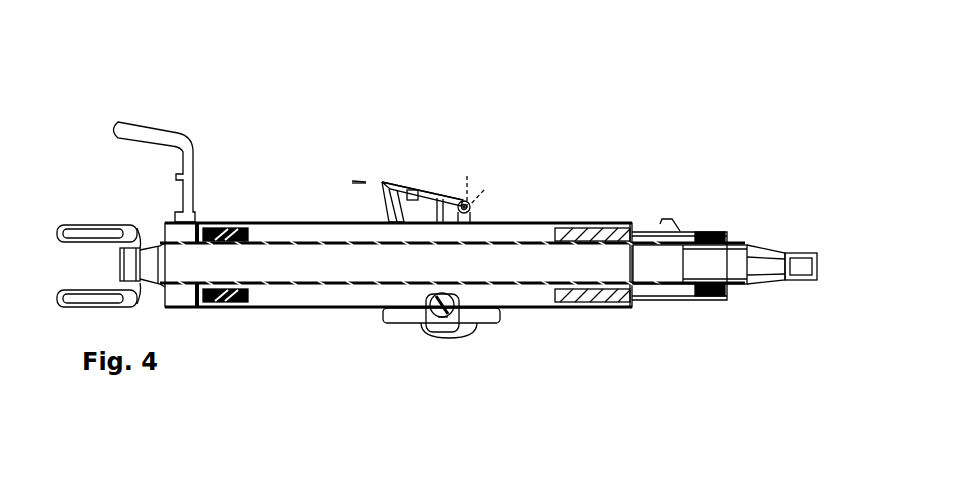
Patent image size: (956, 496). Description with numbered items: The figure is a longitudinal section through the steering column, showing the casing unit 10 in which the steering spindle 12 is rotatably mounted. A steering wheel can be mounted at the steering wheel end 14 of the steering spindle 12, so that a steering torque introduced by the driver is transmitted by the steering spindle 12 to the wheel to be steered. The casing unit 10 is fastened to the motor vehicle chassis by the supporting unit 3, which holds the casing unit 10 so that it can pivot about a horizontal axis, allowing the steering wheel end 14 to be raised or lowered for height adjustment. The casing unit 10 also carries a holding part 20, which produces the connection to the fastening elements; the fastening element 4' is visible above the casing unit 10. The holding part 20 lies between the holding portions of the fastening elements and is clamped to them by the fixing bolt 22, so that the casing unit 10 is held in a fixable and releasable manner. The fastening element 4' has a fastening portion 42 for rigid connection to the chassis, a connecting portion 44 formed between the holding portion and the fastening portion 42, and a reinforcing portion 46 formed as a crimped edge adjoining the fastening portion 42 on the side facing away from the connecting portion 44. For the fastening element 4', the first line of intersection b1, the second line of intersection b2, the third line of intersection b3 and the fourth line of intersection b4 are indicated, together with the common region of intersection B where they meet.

The supporting unit 3 is at (189, 116).
The fastening element 4' is at (439, 131).
The casing unit 10 is at (334, 308).
The steering spindle 12 is at (768, 243).
The steering wheel end 14 is at (804, 247).
The holding part 20 is at (484, 316).
The fixing bolt 22 is at (449, 322).
The fastening portion 42 is at (392, 190).
The connecting portion 44 is at (386, 207).
The reinforcing portion 46 is at (472, 209).
The common region of intersection B is at (470, 206).
The first line of intersection b1 is at (358, 181).
The third line of intersection b3 is at (373, 160).
The second line of intersection b2 is at (485, 189).
The fourth line of intersection b4 is at (466, 176).